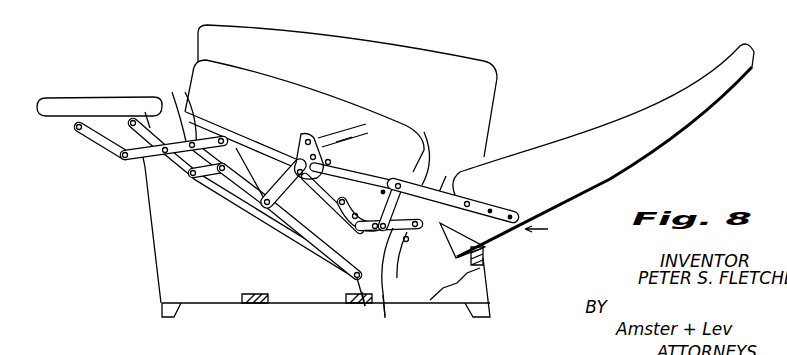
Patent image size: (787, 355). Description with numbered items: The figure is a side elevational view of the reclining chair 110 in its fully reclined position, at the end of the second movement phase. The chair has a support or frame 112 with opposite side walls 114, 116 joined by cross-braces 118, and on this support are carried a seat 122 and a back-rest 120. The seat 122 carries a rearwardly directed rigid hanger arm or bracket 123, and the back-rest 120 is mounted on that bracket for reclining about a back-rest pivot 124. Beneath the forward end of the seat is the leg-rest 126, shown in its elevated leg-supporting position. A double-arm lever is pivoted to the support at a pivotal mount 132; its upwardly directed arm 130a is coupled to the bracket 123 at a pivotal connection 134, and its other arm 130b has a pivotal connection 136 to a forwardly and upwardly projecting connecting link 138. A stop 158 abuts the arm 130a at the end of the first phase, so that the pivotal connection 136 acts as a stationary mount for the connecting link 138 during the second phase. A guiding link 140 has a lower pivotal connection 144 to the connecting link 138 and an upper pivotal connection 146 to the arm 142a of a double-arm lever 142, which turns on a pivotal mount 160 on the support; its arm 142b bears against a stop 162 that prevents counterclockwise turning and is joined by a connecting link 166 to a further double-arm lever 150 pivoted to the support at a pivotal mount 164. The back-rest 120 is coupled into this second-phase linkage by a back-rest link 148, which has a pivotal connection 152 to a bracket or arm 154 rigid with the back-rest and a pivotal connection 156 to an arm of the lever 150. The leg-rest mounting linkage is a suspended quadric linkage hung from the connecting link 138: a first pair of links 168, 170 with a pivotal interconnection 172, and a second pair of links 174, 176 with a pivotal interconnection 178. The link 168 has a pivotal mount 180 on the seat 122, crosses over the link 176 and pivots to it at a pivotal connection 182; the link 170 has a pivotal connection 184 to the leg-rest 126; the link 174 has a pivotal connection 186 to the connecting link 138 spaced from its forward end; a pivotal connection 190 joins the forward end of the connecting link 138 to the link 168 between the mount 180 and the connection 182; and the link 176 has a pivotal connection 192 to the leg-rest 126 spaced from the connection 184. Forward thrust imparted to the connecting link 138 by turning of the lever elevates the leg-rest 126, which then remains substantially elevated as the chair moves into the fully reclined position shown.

The reclining chair 110 is at (551, 228).
The support or frame 112 is at (491, 252).
The side wall 114 is at (491, 290).
The side wall 116 is at (289, 33).
The cross-braces 118 is at (254, 307).
The back-rest 120 is at (628, 155).
The seat 122 is at (262, 63).
The hanger arm or bracket 123 is at (462, 240).
The back-rest pivot 124 is at (476, 204).
The leg-rest 126 is at (70, 100).
The upwardly directed arm of double-arm lever 130a is at (386, 303).
The arm of double-arm lever 130b is at (364, 306).
The pivotal mount 132 is at (366, 230).
The pivotal connection 134 is at (418, 232).
The pivotal connection 136 is at (352, 278).
The connecting link 138 is at (283, 231).
The guiding link 140 is at (278, 175).
The double-arm lever 142 is at (338, 133).
The arm of double-arm lever 142a is at (332, 131).
The arm of double-arm lever 142b is at (280, 186).
The pivotal connection 144 is at (265, 204).
The pivotal connection 146 is at (306, 139).
The back-rest link 148 is at (400, 206).
The double-arm lever 150 is at (349, 231).
The pivotal connection 152 is at (422, 145).
The bracket or arm 154 is at (441, 191).
The pivotal connection 156 is at (333, 246).
The stop 158 is at (395, 262).
The pivotal mount 160 is at (350, 144).
The stop 162 is at (331, 162).
The pivotal mount 164 is at (352, 213).
The connecting link 166 is at (348, 178).
The link 168 is at (140, 178).
The link 170 is at (94, 143).
The pivotal interconnection 172 is at (124, 160).
The link 174 is at (216, 180).
The link 176 is at (146, 112).
The pivotal interconnection 178 is at (200, 178).
The pivotal mount 180 is at (220, 137).
The pivotal connection 182 is at (166, 158).
The pivotal connection 184 is at (77, 129).
The pivotal connection 186 is at (225, 169).
The pivotal connection 190 is at (178, 100).
The pivotal connection 192 is at (147, 129).